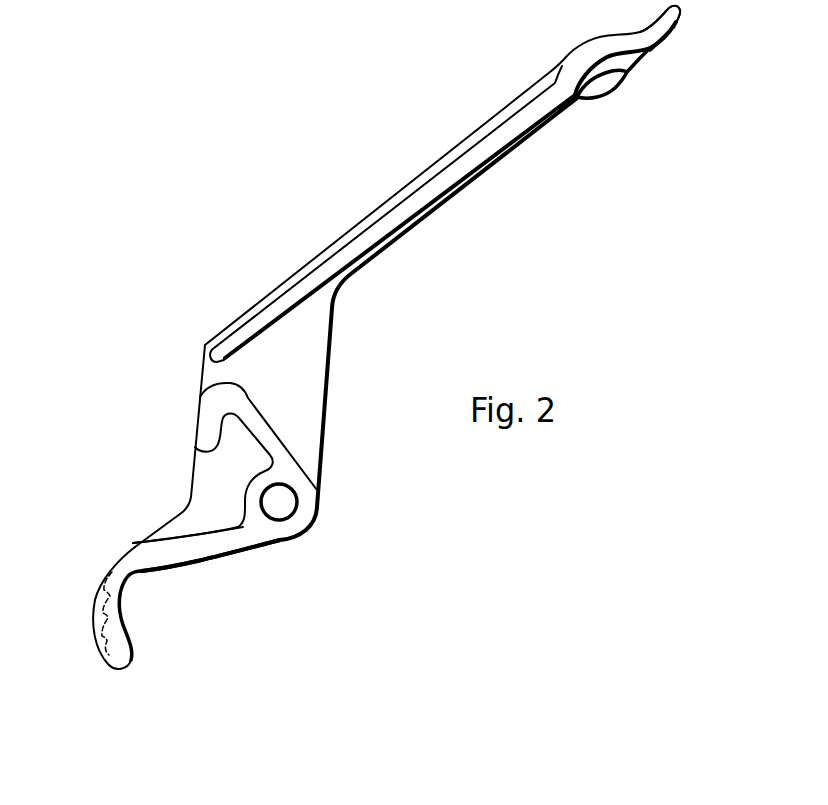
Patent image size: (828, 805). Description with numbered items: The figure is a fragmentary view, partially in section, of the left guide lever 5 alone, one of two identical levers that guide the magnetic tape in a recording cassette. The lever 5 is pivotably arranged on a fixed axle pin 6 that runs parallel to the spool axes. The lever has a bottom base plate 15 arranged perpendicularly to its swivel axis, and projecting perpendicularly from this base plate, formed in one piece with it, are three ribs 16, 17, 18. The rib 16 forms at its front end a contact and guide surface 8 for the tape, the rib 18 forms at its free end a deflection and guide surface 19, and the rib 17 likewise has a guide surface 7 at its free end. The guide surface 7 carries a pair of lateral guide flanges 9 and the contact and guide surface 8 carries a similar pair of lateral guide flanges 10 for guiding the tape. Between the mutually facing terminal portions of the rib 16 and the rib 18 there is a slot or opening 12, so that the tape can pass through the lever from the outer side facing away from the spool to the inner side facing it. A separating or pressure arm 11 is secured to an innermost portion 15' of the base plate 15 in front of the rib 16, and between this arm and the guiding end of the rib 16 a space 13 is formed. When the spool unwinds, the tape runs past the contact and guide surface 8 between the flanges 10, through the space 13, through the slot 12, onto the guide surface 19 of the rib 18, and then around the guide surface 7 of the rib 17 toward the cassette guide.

The lever 5 is at (295, 273).
The axle pin 6 is at (284, 502).
The guide surface 7 is at (102, 603).
The contact and guide surface 8 is at (672, 37).
The lateral guide flange 9 is at (90, 630).
The lateral guide flange 10 is at (651, 53).
The separating or pressure arm 11 is at (618, 75).
The slot or opening 12 is at (212, 377).
The space 13 is at (598, 65).
The base plate 15 is at (359, 334).
The innermost portion of base plate 15' is at (560, 126).
The rib 16 is at (415, 202).
The rib 17 is at (208, 543).
The rib 18 is at (268, 442).
The deflection and guide surface 19 is at (207, 393).